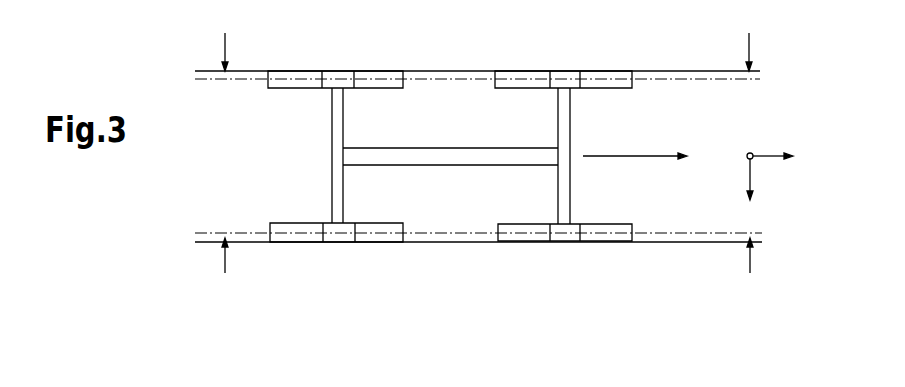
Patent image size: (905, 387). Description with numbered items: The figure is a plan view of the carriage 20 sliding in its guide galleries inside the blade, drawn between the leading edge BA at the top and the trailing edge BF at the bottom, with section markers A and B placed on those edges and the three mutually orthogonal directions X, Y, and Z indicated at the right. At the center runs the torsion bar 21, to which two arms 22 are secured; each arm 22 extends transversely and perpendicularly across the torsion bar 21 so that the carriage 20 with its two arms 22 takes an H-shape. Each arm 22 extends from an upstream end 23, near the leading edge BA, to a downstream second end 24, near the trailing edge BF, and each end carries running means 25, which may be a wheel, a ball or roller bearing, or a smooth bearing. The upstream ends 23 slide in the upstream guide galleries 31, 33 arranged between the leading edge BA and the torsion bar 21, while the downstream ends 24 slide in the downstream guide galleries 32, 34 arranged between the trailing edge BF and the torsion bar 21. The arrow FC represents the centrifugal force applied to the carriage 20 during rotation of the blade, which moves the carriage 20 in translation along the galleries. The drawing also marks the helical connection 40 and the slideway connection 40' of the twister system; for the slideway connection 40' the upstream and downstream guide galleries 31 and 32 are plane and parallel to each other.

The carriage 20 is at (463, 162).
The torsion bar 21 is at (458, 148).
The arm 22 is at (331, 193).
The upstream end 23 is at (323, 97).
The second end 24 is at (352, 213).
The running means 25 is at (333, 71).
The upstream guide gallery 31 is at (378, 71).
The downstream guide gallery 32 is at (383, 243).
The upstream guide gallery 33 is at (593, 88).
The downstream guide gallery 34 is at (597, 224).
The helical connection 40 is at (625, 286).
The slideway connection 40' is at (312, 298).
The leading edge BA is at (203, 71).
The trailing edge BF is at (248, 243).
The section A- A is at (487, 51).
The section B- B is at (490, 257).
The centrifugal force FC is at (652, 158).
The direction X is at (782, 158).
The direction Y is at (749, 194).
The direction Z is at (745, 141).